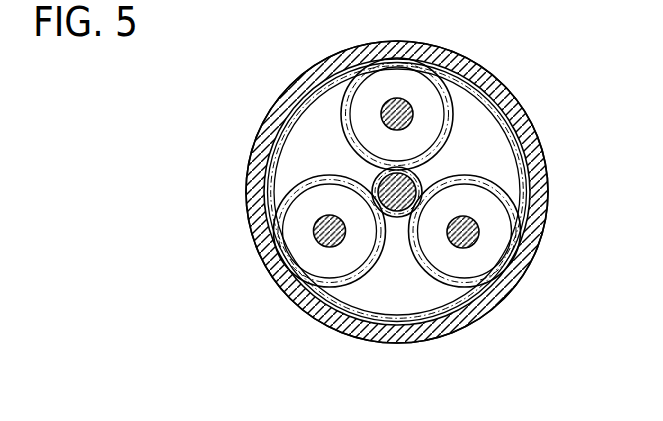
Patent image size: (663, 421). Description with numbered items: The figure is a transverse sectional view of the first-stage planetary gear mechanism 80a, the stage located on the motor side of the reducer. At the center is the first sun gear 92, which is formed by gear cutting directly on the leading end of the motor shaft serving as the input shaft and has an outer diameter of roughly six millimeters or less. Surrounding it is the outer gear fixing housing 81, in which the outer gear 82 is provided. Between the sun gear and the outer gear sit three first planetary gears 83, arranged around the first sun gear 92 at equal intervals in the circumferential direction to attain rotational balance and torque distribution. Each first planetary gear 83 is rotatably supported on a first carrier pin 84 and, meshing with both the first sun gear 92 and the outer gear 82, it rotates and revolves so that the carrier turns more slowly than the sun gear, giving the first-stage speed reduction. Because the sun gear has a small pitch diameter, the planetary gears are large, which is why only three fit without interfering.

The first-stage planetary gear mechanism 80a is at (272, 67).
The outer gear fixing housing 81 is at (500, 82).
The outer gear 82 is at (524, 162).
The first planetary gear 83 is at (438, 286).
The first carrier pin 84 is at (478, 237).
The first sun gear 92 is at (397, 218).